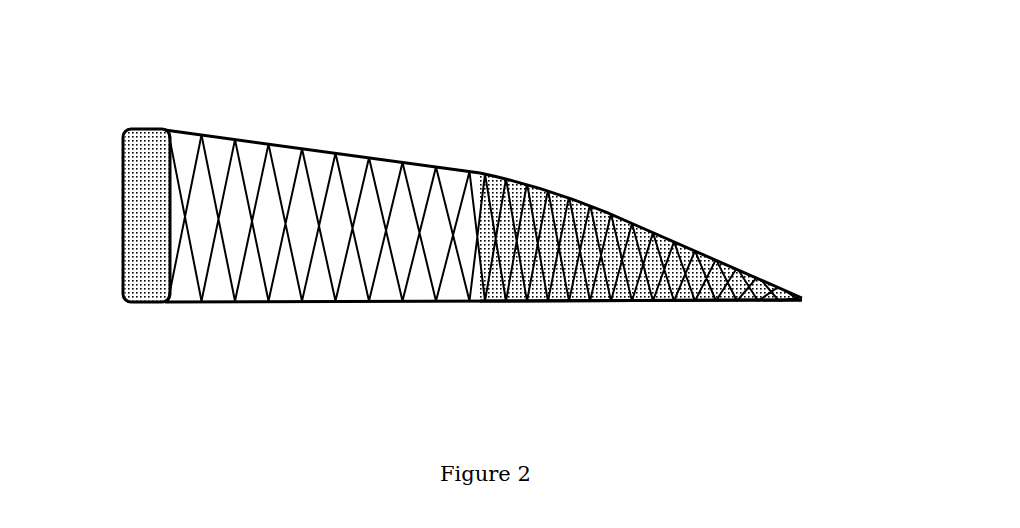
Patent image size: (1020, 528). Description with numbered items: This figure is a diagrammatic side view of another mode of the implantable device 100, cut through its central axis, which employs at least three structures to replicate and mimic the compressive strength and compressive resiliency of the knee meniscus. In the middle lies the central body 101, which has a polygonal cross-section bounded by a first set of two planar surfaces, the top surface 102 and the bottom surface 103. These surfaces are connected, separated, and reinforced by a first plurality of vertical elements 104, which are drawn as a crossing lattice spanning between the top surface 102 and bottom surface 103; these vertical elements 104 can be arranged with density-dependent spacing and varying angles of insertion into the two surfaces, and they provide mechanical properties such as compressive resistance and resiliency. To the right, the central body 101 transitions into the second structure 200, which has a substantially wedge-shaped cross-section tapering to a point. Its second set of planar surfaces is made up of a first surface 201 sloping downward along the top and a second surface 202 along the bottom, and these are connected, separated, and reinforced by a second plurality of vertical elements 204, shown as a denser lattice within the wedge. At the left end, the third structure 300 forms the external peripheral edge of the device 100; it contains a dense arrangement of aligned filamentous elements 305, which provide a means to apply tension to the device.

The implantable device 100 is at (643, 126).
The central body 101 is at (355, 147).
The top surface 102 is at (288, 148).
The bottom surface 103 is at (320, 304).
The first plurality of vertical elements 104 is at (197, 150).
The second structure 200 is at (755, 337).
The first surface 201 is at (660, 232).
The second surface 202 is at (622, 303).
The second plurality of vertical elements 204 is at (497, 286).
The third structure 300 is at (127, 330).
The aligned filamentous elements 305 is at (145, 208).